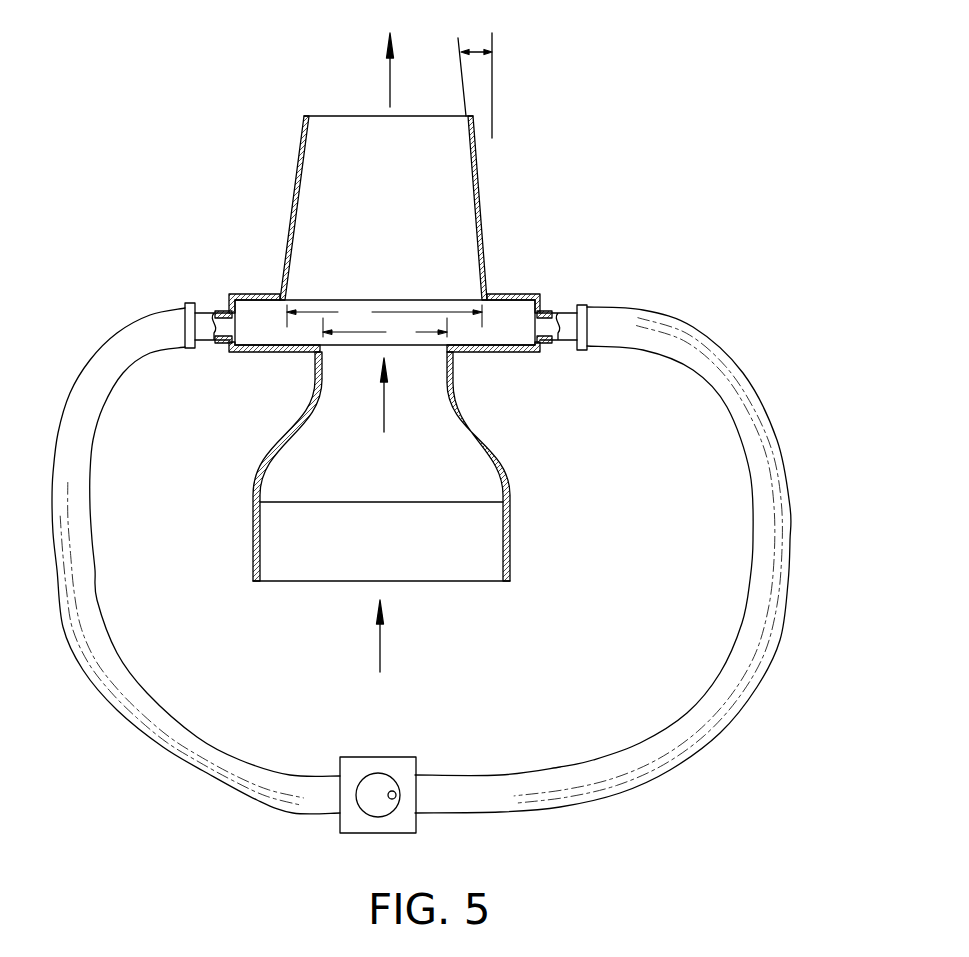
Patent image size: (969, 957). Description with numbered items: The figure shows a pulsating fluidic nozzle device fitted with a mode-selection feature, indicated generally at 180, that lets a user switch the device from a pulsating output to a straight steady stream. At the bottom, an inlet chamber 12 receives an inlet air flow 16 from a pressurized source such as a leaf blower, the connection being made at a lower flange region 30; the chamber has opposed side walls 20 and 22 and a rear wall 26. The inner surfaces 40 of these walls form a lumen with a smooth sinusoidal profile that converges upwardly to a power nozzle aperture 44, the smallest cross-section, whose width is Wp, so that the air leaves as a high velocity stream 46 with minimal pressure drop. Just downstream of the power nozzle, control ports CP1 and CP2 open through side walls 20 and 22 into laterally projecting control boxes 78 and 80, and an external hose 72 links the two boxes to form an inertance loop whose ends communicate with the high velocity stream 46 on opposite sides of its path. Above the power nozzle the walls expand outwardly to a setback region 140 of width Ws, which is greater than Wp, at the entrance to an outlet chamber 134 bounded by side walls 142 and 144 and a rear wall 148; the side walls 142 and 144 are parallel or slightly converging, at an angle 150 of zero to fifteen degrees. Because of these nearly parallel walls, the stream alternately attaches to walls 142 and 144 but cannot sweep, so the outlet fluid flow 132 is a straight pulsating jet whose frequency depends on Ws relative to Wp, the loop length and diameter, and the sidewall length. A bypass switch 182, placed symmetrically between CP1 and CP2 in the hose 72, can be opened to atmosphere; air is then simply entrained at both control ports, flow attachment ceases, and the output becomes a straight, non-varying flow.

The inlet chamber 12 is at (494, 438).
The inlet air flow 16 is at (382, 652).
The first side wall of inlet chamber 20 is at (258, 477).
The second side wall of inlet chamber 22 is at (512, 485).
The rear wall of inlet chamber 26 is at (453, 488).
The lower flange region 30 is at (470, 572).
The inner surfaces of inlet chamber walls 40 is at (297, 450).
The power nozzle aperture 44 is at (447, 383).
The high velocity air stream 46 is at (386, 410).
The hose 72 is at (608, 303).
The first control box 78 is at (262, 294).
The second control box 80 is at (527, 294).
The outlet fluid flow 132 is at (390, 82).
The outlet chamber 134 is at (486, 160).
The setback region 140 is at (481, 297).
The first outlet chamber side wall 142 is at (288, 233).
The second outlet chamber side wall 144 is at (484, 217).
The rear wall of outlet chamber 148 is at (345, 197).
The angle 150 is at (479, 49).
The mode-selection aspect of fluidic device 180 is at (556, 175).
The mode selection or bypass switch 182 is at (398, 757).
The first control port CP1 is at (207, 347).
The second control port CP2 is at (588, 343).
The setback width Ws is at (384, 316).
The power nozzle width Wp is at (385, 332).